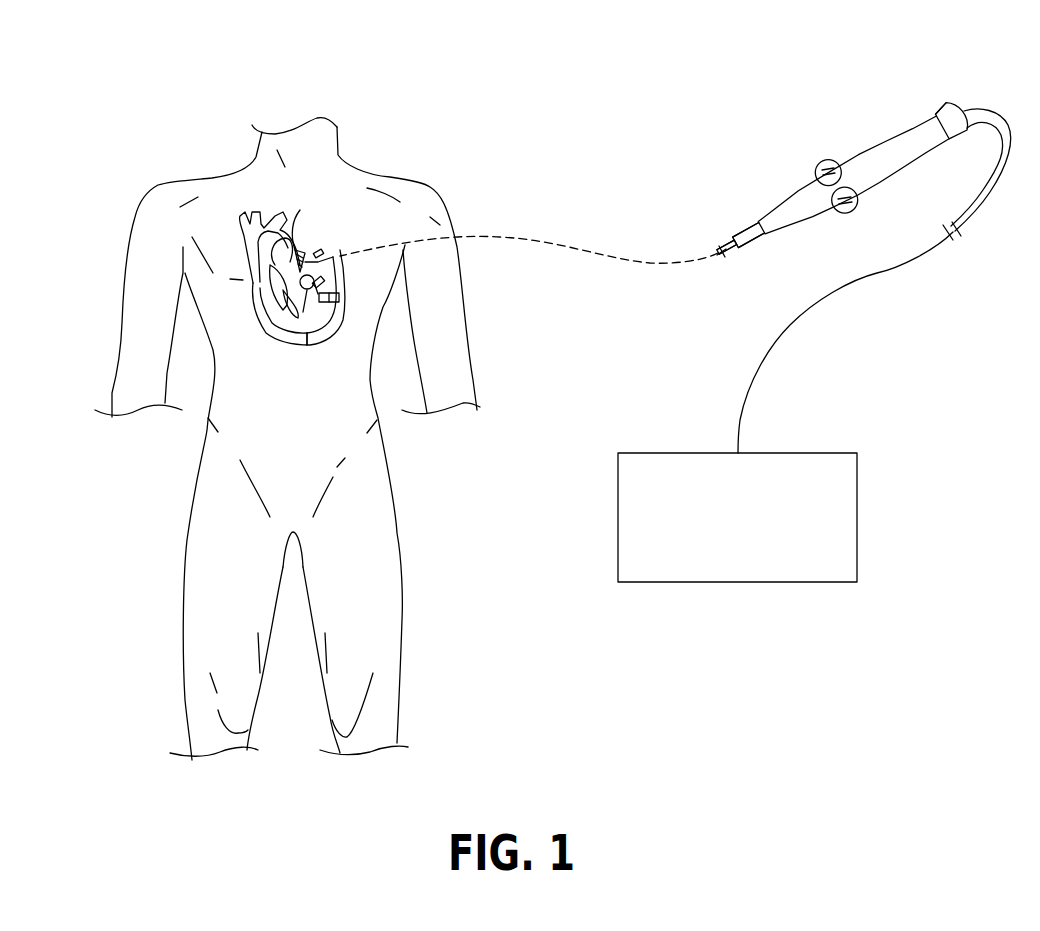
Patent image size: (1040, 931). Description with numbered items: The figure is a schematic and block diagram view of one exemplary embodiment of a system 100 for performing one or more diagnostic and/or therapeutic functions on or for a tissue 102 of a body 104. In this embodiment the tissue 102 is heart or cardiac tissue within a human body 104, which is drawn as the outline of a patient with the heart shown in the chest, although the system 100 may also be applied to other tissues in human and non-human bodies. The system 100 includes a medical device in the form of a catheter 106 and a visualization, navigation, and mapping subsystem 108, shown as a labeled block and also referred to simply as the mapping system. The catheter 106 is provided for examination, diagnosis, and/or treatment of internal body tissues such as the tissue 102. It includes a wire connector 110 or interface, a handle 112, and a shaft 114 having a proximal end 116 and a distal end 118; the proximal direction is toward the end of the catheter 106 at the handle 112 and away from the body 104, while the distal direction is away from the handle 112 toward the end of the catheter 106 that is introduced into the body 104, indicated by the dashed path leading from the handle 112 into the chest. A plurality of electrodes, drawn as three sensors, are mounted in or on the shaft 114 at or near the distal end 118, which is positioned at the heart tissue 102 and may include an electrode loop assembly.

The system 100 is at (545, 103).
The tissue 102 is at (344, 314).
The body 104 is at (187, 548).
The catheter 106 is at (835, 140).
The visualization, navigation, and mapping subsystem 108 is at (858, 475).
The wire connector 110 is at (935, 113).
The handle 112 is at (880, 142).
The shaft 114 is at (722, 250).
The proximal end 116 is at (742, 262).
The distal end 118 is at (310, 142).